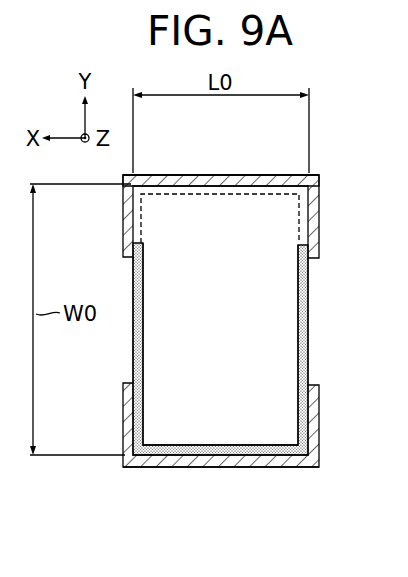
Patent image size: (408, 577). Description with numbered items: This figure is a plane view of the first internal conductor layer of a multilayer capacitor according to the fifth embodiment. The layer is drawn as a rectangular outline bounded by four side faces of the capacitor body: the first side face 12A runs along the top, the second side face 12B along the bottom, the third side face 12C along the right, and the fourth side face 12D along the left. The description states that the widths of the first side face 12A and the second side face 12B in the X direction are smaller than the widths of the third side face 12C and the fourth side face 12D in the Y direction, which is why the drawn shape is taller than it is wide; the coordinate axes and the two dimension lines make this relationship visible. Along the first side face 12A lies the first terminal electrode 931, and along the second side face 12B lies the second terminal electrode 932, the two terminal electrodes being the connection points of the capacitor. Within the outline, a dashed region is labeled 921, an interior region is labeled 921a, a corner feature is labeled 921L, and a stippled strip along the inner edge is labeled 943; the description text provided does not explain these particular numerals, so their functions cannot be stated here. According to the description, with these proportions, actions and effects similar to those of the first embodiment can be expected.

The first side face 12A is at (187, 177).
The second side face 12B is at (263, 460).
The third side face 12C is at (307, 316).
The fourth side face 12D is at (133, 281).
The light shielding portion 921 is at (204, 230).
The opening 921a is at (233, 409).
The light shielding layer 921L is at (306, 189).
The first terminal electrode 931 is at (253, 177).
The second terminal electrode 932 is at (180, 460).
The adhesive layer 943 is at (132, 359).